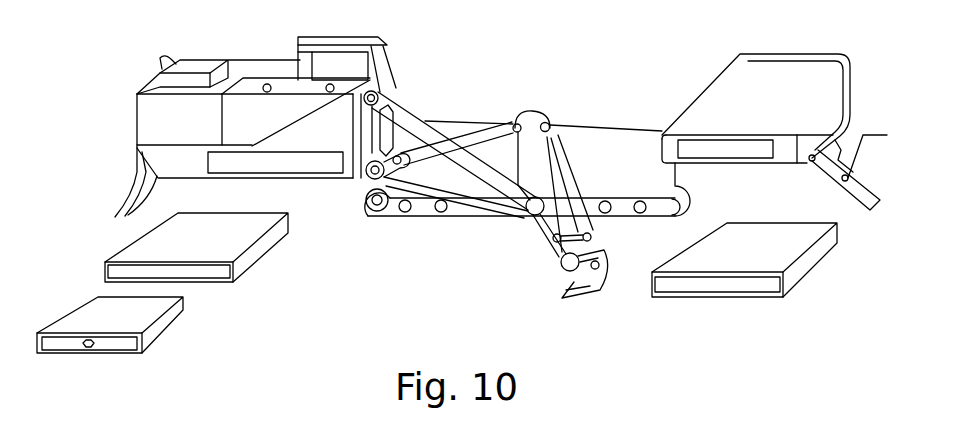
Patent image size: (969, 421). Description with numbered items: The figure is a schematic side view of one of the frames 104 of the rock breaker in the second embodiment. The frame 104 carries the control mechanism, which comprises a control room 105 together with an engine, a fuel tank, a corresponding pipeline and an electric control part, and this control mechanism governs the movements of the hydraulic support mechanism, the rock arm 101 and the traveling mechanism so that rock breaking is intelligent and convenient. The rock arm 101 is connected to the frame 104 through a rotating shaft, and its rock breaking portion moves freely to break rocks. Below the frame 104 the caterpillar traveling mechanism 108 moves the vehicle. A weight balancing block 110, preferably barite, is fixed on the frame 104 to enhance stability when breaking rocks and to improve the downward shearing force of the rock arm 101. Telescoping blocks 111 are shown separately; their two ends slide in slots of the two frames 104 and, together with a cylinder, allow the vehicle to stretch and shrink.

The rock arm 101 is at (535, 126).
The frame 104 is at (610, 127).
The control room 105 is at (352, 73).
The caterpillar traveling mechanism 108 is at (434, 197).
The weight balancing block 110 is at (767, 93).
The telescoping block 111 is at (177, 318).